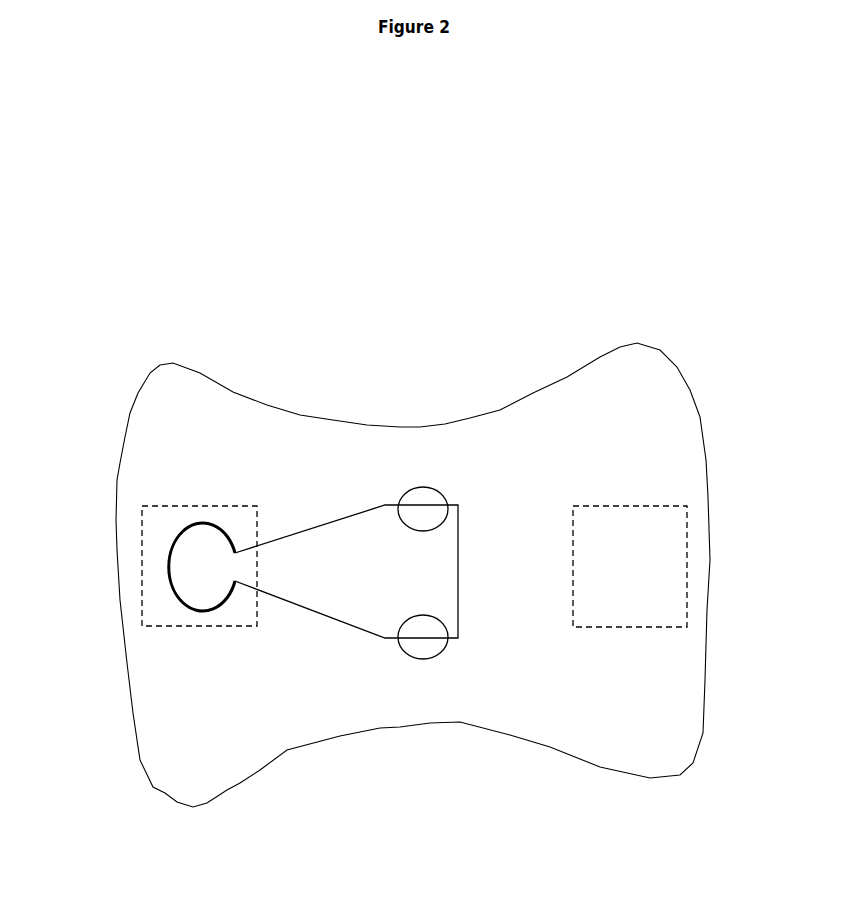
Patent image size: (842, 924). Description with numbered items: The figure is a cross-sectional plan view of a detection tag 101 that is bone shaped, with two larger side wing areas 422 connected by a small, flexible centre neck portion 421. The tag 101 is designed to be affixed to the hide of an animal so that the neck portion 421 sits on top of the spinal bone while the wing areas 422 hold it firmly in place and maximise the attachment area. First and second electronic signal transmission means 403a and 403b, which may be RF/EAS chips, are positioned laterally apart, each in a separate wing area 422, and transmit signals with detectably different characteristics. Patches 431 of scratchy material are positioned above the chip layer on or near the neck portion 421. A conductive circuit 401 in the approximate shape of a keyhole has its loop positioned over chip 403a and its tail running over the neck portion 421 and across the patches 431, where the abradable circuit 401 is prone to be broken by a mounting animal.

The detection tag 101 is at (202, 290).
The conductive circuit 401 is at (178, 598).
The first electronic signal transmission means 403a is at (160, 530).
The second electronic signal transmission means 403b is at (647, 562).
The centre neck portion 421 is at (398, 682).
The side wing areas 422 is at (200, 755).
The patches 431 is at (422, 503).